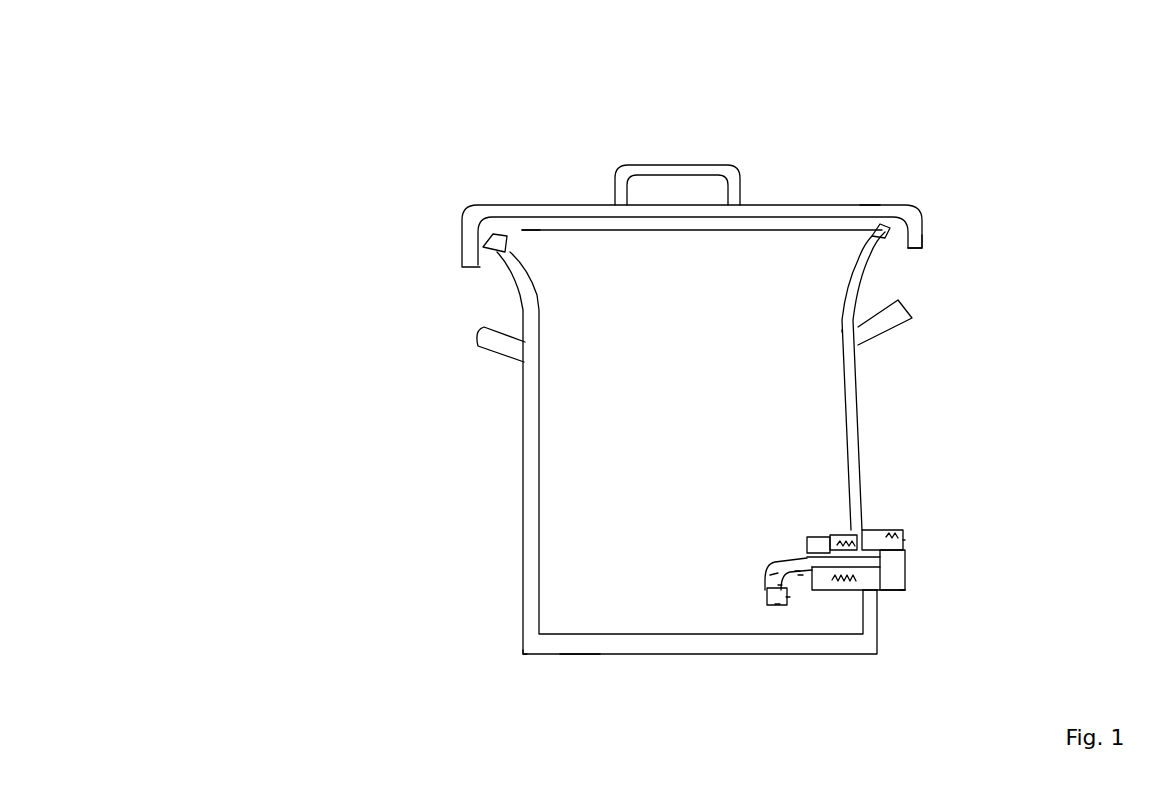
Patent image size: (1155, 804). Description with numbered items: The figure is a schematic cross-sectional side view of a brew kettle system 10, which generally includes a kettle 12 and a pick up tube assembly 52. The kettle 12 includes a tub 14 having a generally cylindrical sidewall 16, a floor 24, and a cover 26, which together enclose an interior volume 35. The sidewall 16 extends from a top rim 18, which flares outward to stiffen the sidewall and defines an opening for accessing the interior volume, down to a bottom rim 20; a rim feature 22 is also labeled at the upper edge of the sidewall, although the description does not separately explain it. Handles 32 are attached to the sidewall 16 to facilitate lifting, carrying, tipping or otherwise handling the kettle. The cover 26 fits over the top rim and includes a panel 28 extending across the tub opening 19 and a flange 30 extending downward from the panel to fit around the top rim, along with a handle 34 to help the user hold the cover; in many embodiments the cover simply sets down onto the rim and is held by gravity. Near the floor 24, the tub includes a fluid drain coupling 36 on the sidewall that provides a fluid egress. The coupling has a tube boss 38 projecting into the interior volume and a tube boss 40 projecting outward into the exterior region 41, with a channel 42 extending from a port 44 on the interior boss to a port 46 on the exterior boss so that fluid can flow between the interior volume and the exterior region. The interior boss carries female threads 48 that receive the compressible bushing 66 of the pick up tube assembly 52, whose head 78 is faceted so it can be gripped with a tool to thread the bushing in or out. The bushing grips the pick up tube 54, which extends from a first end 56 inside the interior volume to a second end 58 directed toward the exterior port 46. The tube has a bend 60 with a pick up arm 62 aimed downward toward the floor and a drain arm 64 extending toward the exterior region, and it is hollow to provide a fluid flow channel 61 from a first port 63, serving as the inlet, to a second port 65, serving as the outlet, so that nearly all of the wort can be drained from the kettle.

The brew kettle system 10 is at (311, 164).
The kettle 12 is at (519, 587).
The tub 14 is at (528, 480).
The sidewall 16 is at (535, 538).
The top rim 18 is at (522, 232).
The tub opening 19 is at (752, 240).
The bottom rim 20 is at (520, 645).
The rim 22 is at (495, 272).
The floor 24 is at (582, 643).
The cover 26 is at (506, 206).
The panel 28 is at (565, 205).
The flange 30 is at (913, 223).
The handles 32 is at (480, 343).
The handle 34 is at (667, 165).
The interior volume 35 is at (865, 163).
The fluid drain coupling 36 is at (882, 528).
The tube boss 38 is at (848, 532).
The tube boss 40 is at (889, 532).
The exterior region 41 is at (1006, 382).
The channel 42 is at (905, 548).
The port 44 is at (810, 545).
The port 46 is at (905, 565).
The female threads 48 is at (835, 535).
The pick up tube assembly 52 is at (771, 566).
The pick up tube 54 is at (778, 597).
The first end 56 is at (788, 600).
The second end 58 is at (903, 590).
The bend 60 is at (772, 576).
The fluid flow channel 61 is at (800, 577).
The pick up arm 62 is at (780, 587).
The first port 63 is at (777, 607).
The drain arm 64 is at (878, 597).
The second port 65 is at (956, 514).
The compressible bushing 66 is at (843, 580).
The head 78 is at (797, 573).